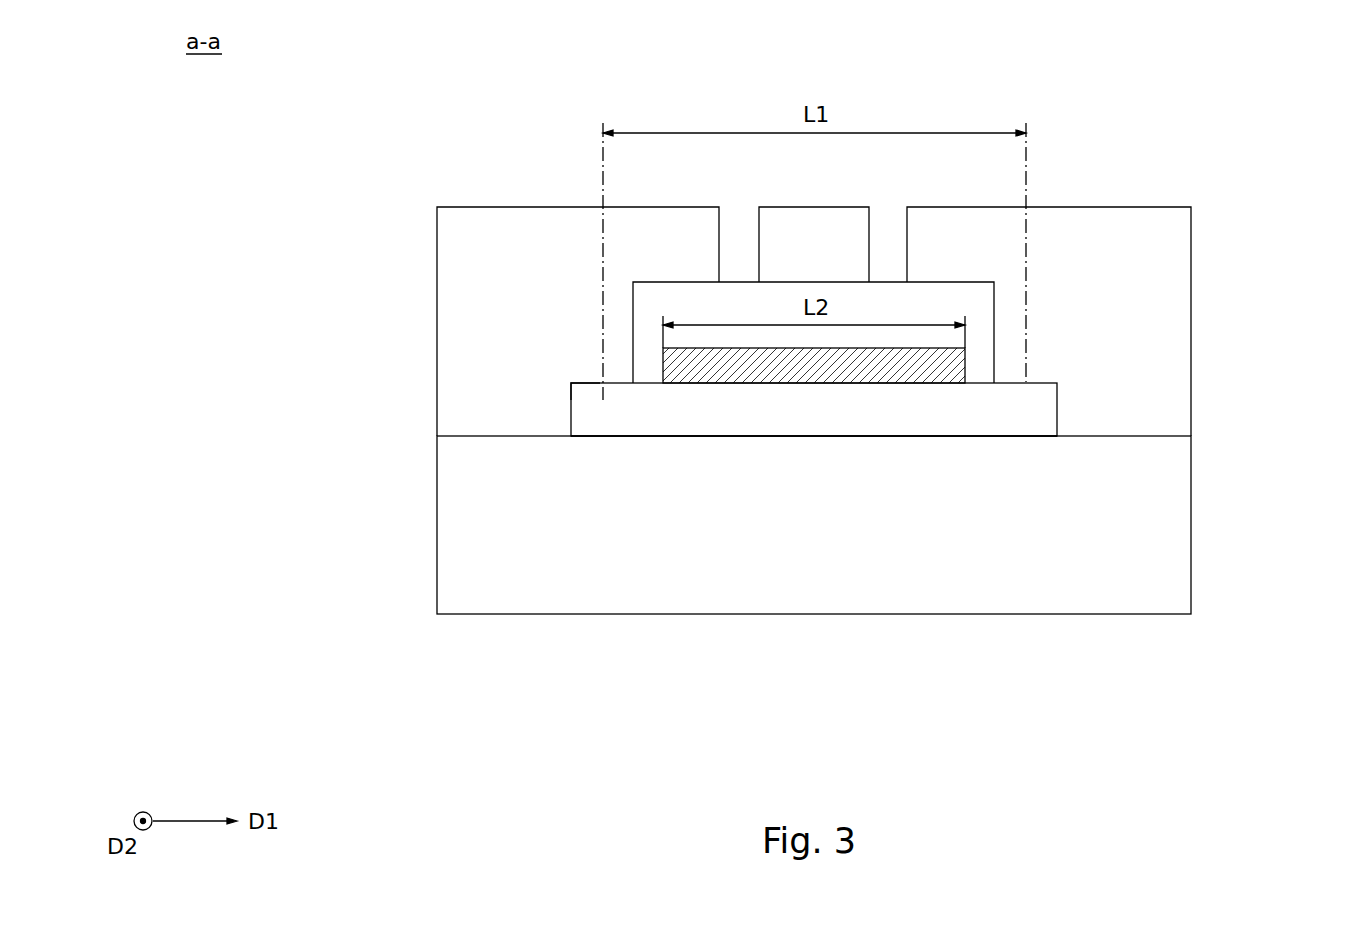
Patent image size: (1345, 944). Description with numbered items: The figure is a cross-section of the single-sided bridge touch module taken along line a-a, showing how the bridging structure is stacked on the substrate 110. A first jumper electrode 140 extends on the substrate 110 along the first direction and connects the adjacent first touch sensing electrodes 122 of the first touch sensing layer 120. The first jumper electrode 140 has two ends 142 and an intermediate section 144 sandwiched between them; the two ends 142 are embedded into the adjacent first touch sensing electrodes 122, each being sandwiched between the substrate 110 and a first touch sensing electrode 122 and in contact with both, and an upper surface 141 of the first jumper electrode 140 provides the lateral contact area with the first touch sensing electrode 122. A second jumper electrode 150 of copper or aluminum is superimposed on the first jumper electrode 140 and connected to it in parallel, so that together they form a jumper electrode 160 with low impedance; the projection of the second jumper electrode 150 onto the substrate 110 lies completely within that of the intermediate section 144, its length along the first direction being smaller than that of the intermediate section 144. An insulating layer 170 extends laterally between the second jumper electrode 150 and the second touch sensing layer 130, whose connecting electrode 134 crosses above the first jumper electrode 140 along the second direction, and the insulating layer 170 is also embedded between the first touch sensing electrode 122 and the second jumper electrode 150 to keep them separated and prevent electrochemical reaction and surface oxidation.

The substrate 110 is at (1173, 542).
The first touch sensing layer 120 is at (1173, 322).
The first touch sensing electrode 122 is at (881, 321).
The second touch sensing layer 130 is at (818, 208).
The connecting electrode 134 is at (814, 217).
The first jumper electrode 140 is at (778, 679).
The upper surface of the first jumper electrode 141 is at (592, 383).
The end of the first jumper electrode 142 is at (732, 412).
The intermediate section of the first jumper electrode 144 is at (614, 412).
The second jumper electrode 150 is at (851, 365).
The jumper electrode 160 is at (805, 730).
The insulating layer 170 is at (983, 358).